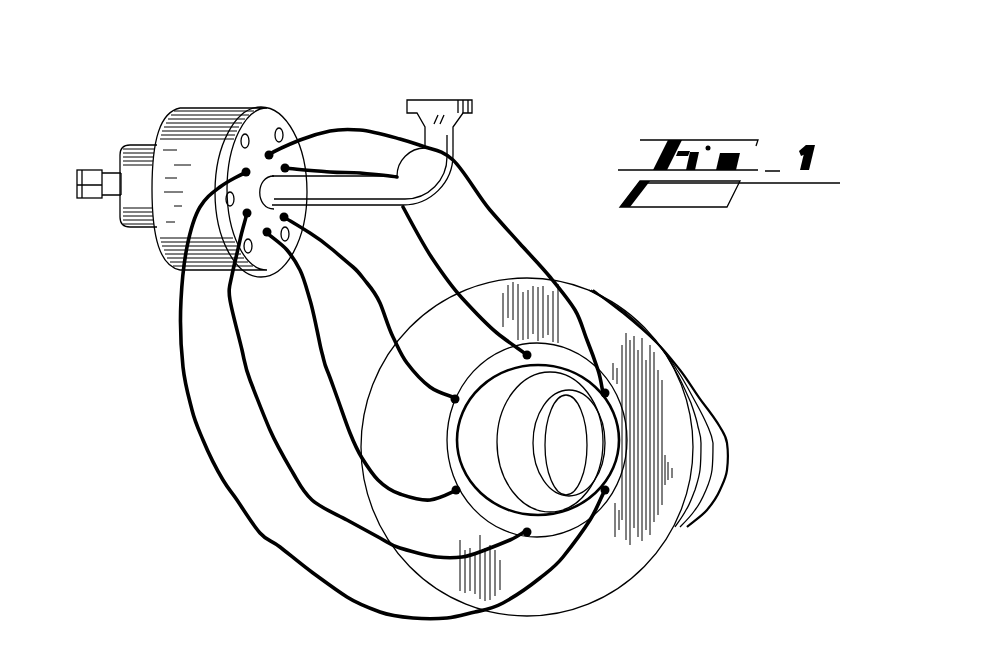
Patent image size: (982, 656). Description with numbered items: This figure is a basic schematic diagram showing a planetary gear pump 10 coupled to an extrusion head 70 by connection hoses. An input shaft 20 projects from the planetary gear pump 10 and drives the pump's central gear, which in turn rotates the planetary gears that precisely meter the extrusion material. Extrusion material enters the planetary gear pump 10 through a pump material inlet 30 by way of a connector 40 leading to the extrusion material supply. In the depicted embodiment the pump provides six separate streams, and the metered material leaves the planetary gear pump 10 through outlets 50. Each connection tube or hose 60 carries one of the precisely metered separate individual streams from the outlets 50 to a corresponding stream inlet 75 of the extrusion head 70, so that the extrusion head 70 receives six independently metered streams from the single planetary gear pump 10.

The planetary gear pump 10 is at (203, 272).
The input shaft 20 is at (100, 200).
The pump material inlet 30 is at (258, 174).
The connector 40 is at (455, 97).
The outlets 50 is at (243, 170).
The connection tube or hose 60 is at (223, 483).
The extrusion head 70 is at (618, 343).
The stream inlets 75 is at (690, 382).